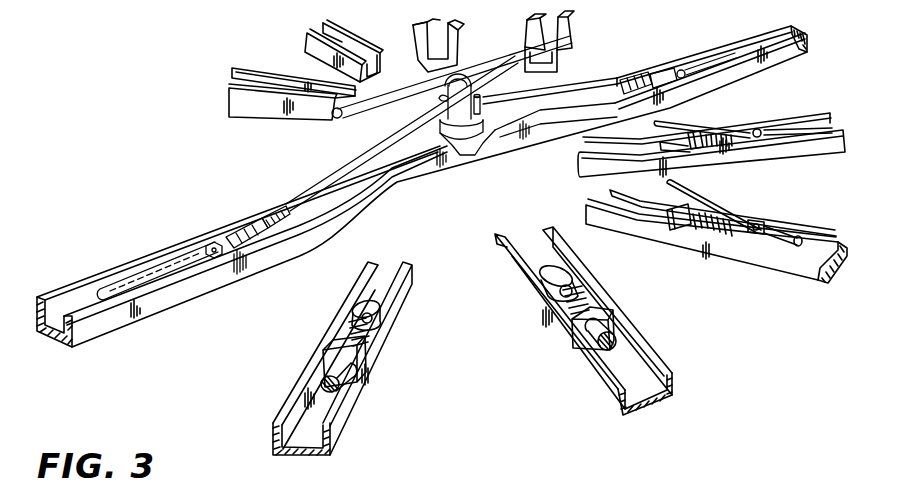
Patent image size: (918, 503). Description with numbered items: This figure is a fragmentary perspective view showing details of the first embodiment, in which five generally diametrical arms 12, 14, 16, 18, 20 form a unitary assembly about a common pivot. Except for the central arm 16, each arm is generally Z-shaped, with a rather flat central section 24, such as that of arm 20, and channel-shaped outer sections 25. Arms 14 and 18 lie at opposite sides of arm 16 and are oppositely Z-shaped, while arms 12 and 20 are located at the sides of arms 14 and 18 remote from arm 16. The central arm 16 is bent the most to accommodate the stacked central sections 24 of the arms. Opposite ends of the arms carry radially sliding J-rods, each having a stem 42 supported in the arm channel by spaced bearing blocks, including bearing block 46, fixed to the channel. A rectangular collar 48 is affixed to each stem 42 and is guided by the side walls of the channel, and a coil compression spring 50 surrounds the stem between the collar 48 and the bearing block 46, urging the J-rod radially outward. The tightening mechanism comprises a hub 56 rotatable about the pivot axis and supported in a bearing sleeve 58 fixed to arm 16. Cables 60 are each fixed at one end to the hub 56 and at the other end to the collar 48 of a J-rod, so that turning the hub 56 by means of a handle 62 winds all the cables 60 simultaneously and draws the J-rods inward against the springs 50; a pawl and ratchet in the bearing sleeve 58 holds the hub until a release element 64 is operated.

The arm 12 is at (402, 31).
The arm 14 is at (584, 28).
The central arm 16 is at (266, 256).
The arm 18 is at (250, 102).
The arm 20 is at (303, 41).
The central section 24 is at (447, 158).
The channel-shaped outer section 25 is at (104, 318).
The stem 42 is at (340, 390).
The bearing block 46 is at (673, 227).
The collar 48 is at (763, 219).
The coil compression spring 50 is at (733, 243).
The hub 56 is at (445, 100).
The bearing sleeve 58 is at (467, 140).
The cable 60 is at (340, 171).
The handle 62 is at (392, 100).
The release element 64 is at (484, 103).